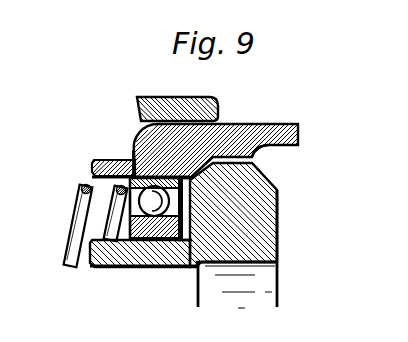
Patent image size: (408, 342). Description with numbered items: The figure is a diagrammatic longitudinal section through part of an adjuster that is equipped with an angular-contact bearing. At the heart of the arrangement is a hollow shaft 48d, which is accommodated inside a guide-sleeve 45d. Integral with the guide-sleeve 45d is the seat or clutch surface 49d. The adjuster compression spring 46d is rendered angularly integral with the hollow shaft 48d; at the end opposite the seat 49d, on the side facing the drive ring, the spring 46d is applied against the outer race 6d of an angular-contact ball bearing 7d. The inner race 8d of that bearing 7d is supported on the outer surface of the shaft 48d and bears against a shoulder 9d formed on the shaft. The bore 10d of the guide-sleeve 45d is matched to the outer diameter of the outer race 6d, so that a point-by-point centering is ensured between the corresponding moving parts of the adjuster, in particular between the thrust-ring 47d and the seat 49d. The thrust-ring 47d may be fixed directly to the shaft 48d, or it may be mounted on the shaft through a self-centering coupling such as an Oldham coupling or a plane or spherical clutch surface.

The guide-sleeve 45d is at (218, 112).
The seat or clutch surface 49d is at (212, 146).
The bore 10d is at (114, 160).
The angular-contact ball bearing 7d is at (134, 178).
The outer race 6d is at (201, 181).
The thrust-ring 47d is at (260, 222).
The inner race 8d is at (112, 268).
The hollow shaft 48d is at (138, 268).
The shoulder 9d is at (175, 268).
The adjuster compression spring 46d is at (80, 185).